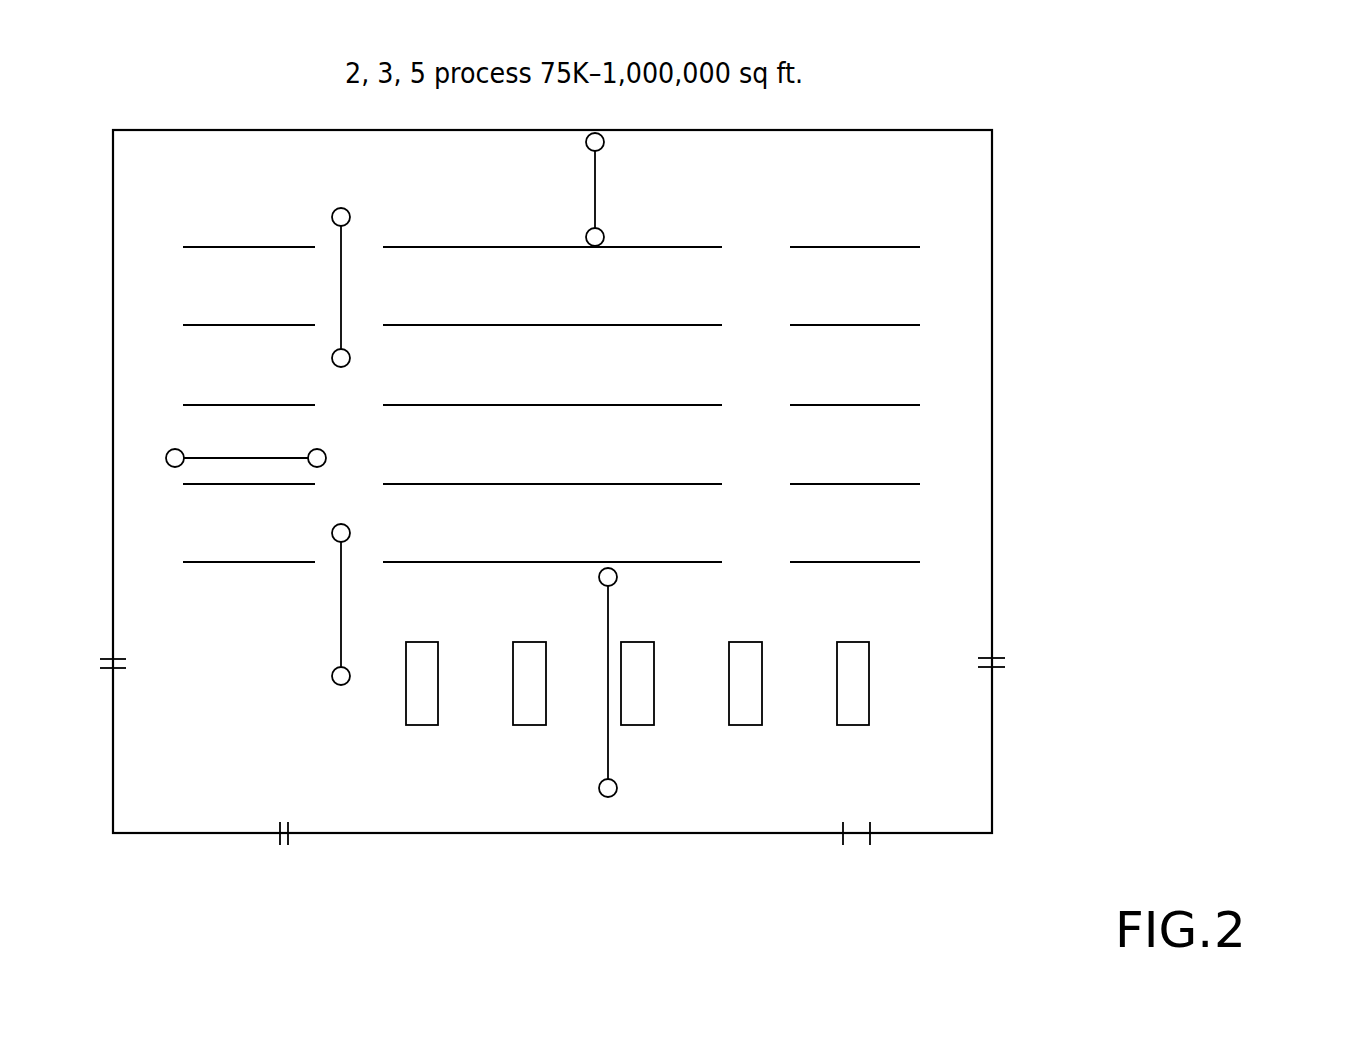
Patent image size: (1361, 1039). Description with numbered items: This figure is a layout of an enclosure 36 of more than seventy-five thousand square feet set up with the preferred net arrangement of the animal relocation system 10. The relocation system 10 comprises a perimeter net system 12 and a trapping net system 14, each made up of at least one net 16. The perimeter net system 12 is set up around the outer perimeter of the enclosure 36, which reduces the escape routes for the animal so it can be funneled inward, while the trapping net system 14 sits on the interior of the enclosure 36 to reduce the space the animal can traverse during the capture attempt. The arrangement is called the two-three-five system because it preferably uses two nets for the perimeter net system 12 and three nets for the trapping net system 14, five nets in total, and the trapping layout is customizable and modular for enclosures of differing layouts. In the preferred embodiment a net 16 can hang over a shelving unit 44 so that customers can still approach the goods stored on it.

The animal relocation system 10 is at (1253, 102).
The perimeter net system 12 is at (615, 179).
The trapping net system 14 is at (370, 209).
The net 16 is at (608, 613).
The enclosure 36 is at (992, 300).
The shelving unit 44 is at (432, 484).